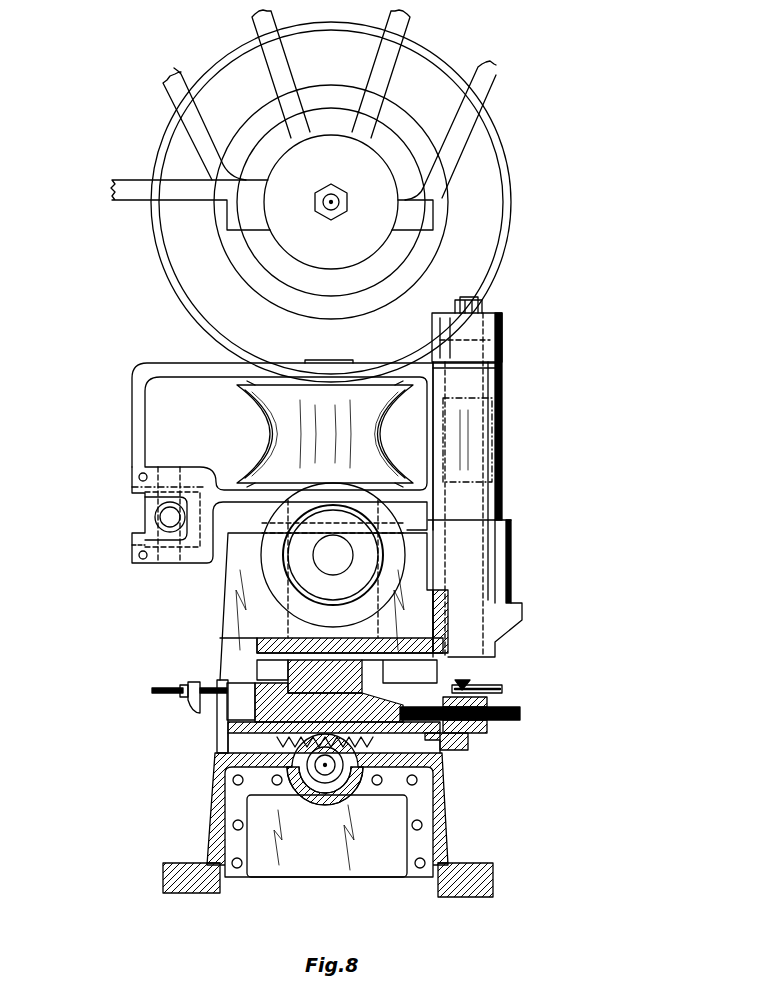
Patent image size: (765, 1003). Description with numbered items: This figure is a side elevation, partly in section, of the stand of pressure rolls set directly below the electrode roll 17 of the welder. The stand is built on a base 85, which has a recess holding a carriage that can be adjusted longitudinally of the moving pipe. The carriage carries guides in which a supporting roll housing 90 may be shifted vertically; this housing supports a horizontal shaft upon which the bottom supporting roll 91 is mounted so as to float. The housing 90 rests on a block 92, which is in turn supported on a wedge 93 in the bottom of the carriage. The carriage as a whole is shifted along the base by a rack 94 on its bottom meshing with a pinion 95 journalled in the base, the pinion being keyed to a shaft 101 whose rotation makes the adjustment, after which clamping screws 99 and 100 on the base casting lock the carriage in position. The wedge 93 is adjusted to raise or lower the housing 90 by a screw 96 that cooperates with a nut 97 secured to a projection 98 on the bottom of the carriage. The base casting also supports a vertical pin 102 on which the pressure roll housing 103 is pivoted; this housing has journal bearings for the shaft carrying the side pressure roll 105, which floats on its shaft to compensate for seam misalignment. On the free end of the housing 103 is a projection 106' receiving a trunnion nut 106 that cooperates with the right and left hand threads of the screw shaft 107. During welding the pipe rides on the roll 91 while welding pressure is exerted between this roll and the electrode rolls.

The electrode roll 17 is at (478, 232).
The pin 102 is at (505, 325).
The pressure roll housing 103 is at (145, 378).
The side pressure roll 105 is at (268, 437).
The trunnion nut 106 is at (122, 519).
The screw shaft 107 is at (168, 515).
The projection 106' is at (95, 552).
The roll 91 is at (400, 562).
The supporting roll housing 90 is at (428, 630).
The block 92 is at (272, 680).
The clamping screw 99 is at (190, 683).
The clamping screw 100 is at (465, 685).
The nut 97 is at (498, 693).
The screw 96 is at (520, 714).
The projection 98 is at (467, 743).
The wedge 93 is at (267, 707).
The rack 94 is at (290, 740).
The pinion 95 is at (318, 768).
The shaft 101 is at (300, 778).
The base 85 is at (445, 816).